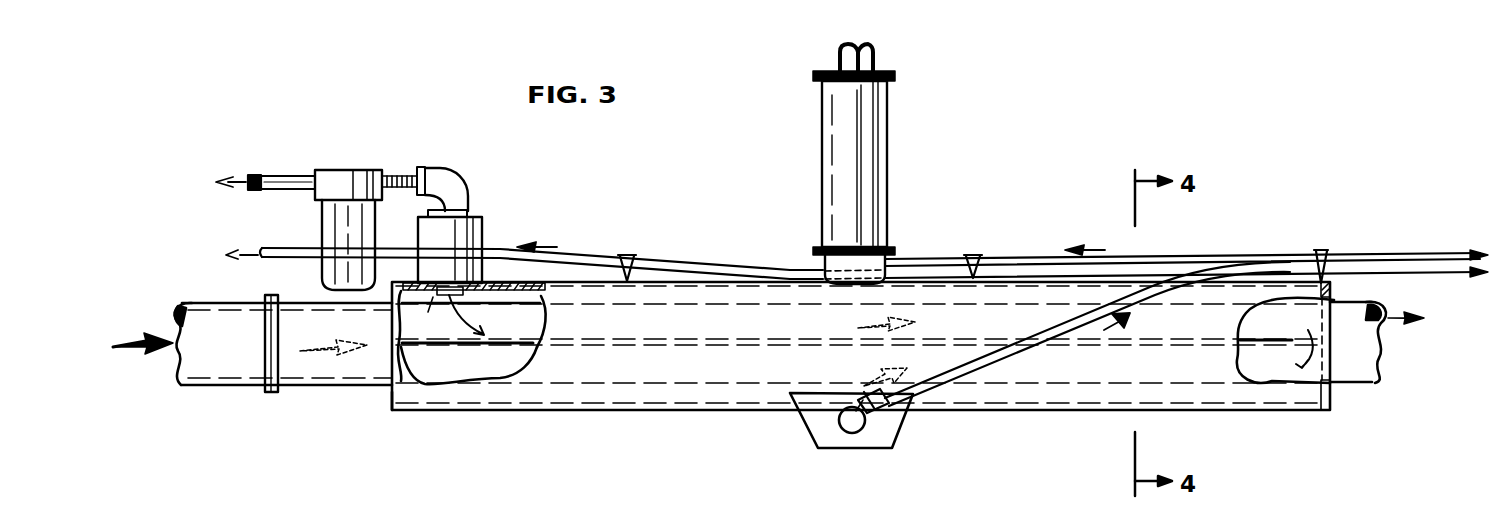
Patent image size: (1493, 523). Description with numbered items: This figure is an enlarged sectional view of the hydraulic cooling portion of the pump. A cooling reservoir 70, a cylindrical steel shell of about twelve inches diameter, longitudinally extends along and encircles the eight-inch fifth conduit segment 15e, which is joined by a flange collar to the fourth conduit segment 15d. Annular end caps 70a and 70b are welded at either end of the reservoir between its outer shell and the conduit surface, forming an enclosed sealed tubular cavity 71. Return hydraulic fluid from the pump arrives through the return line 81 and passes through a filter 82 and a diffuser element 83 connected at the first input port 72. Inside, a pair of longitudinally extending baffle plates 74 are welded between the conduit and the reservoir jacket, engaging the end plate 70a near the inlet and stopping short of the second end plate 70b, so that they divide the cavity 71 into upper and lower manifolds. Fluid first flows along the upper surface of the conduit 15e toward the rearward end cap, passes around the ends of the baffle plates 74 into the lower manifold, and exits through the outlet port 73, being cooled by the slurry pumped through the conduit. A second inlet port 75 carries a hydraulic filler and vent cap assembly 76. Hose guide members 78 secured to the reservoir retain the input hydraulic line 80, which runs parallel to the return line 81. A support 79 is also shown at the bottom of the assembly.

The fourth conduit segment 15d is at (222, 366).
The fifth conduit segment 15e is at (313, 369).
The cooling reservoir 70 is at (710, 411).
The annular end cap 70a is at (392, 393).
The annular end cap 70b is at (1334, 384).
The tubular cavity 71 is at (523, 296).
The first input port 72 is at (446, 312).
The outlet port 73 is at (848, 434).
The baffle plates 74 is at (519, 348).
The second inlet port 75 is at (880, 271).
The hydraulic filler and vent cap assembly 76 is at (879, 162).
The hose guide members 78 is at (628, 266).
The support 79 is at (650, 517).
The input hydraulic line 80 is at (300, 258).
The return line 81 is at (276, 176).
The filter 82 is at (357, 180).
The diffuser element 83 is at (443, 186).